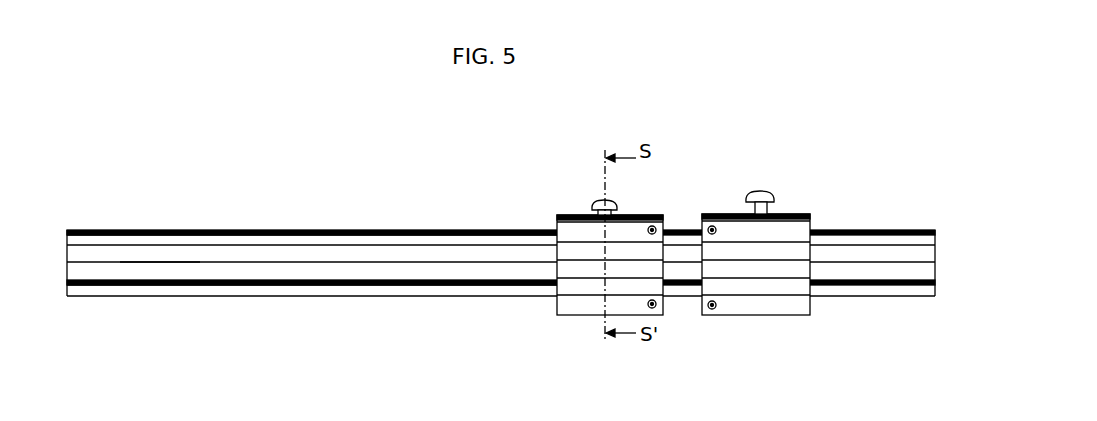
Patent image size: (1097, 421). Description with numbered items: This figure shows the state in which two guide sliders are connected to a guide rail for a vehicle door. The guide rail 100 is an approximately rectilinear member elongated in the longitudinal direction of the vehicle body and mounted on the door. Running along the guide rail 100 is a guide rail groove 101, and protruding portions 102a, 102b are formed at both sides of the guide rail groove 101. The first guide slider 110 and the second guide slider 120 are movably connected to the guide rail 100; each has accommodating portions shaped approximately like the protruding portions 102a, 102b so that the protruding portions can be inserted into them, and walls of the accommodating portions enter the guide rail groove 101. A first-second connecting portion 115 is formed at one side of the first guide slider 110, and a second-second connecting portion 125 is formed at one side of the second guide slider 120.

The guide rail 100 is at (197, 232).
The guide rail groove 101 is at (166, 257).
The protruding portion 102a is at (110, 241).
The protruding portion 102b is at (107, 290).
The first guide slider 110 is at (583, 311).
The first-second connecting portion 115 is at (596, 201).
The second guide slider 120 is at (758, 311).
The second-second connecting portion 125 is at (760, 192).